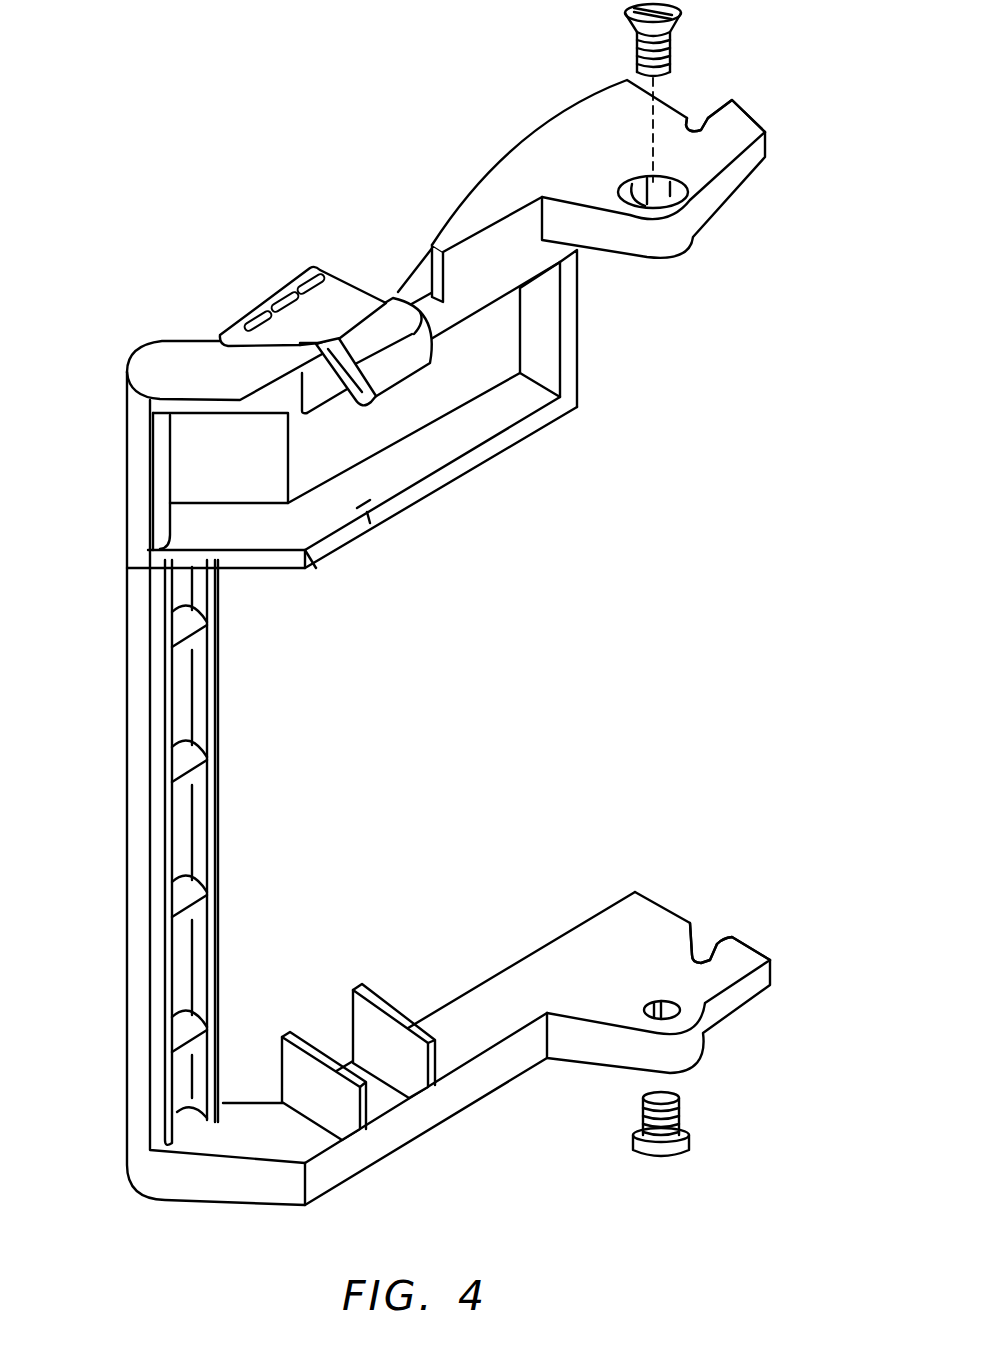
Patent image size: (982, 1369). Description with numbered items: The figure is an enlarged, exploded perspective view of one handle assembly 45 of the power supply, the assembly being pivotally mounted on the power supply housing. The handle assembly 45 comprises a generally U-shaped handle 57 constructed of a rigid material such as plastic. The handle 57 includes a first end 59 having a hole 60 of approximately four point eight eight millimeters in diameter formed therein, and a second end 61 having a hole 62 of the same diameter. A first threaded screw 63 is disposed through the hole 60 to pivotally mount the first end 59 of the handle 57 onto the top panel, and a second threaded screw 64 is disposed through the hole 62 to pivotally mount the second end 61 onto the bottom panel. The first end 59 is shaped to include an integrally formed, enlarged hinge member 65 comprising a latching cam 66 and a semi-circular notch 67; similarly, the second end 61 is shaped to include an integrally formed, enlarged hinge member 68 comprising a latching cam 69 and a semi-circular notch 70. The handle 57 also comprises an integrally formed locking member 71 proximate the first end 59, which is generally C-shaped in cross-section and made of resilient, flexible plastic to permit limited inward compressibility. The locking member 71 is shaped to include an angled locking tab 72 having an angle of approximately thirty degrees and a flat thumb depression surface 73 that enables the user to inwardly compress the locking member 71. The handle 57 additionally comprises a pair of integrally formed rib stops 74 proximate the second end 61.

The handle assembly 45 is at (280, 122).
The handle 57 is at (220, 800).
The first end 59 is at (432, 202).
The hole 60 is at (630, 187).
The second end 61 is at (494, 952).
The hole 62 is at (676, 998).
The first threaded screw 63 is at (675, 50).
The second threaded screw 64 is at (695, 1143).
The hinge member 65 is at (590, 118).
The latching cam 66 is at (736, 100).
The semi-circular notch 67 is at (698, 114).
The hinge member 68 is at (564, 896).
The latching cam 69 is at (725, 942).
The semi-circular notch 70 is at (695, 956).
The locking member 71 is at (298, 238).
The angled locking tab 72 is at (362, 336).
The thumb depression surface 73 is at (320, 320).
The rib stops 74 is at (304, 1062).